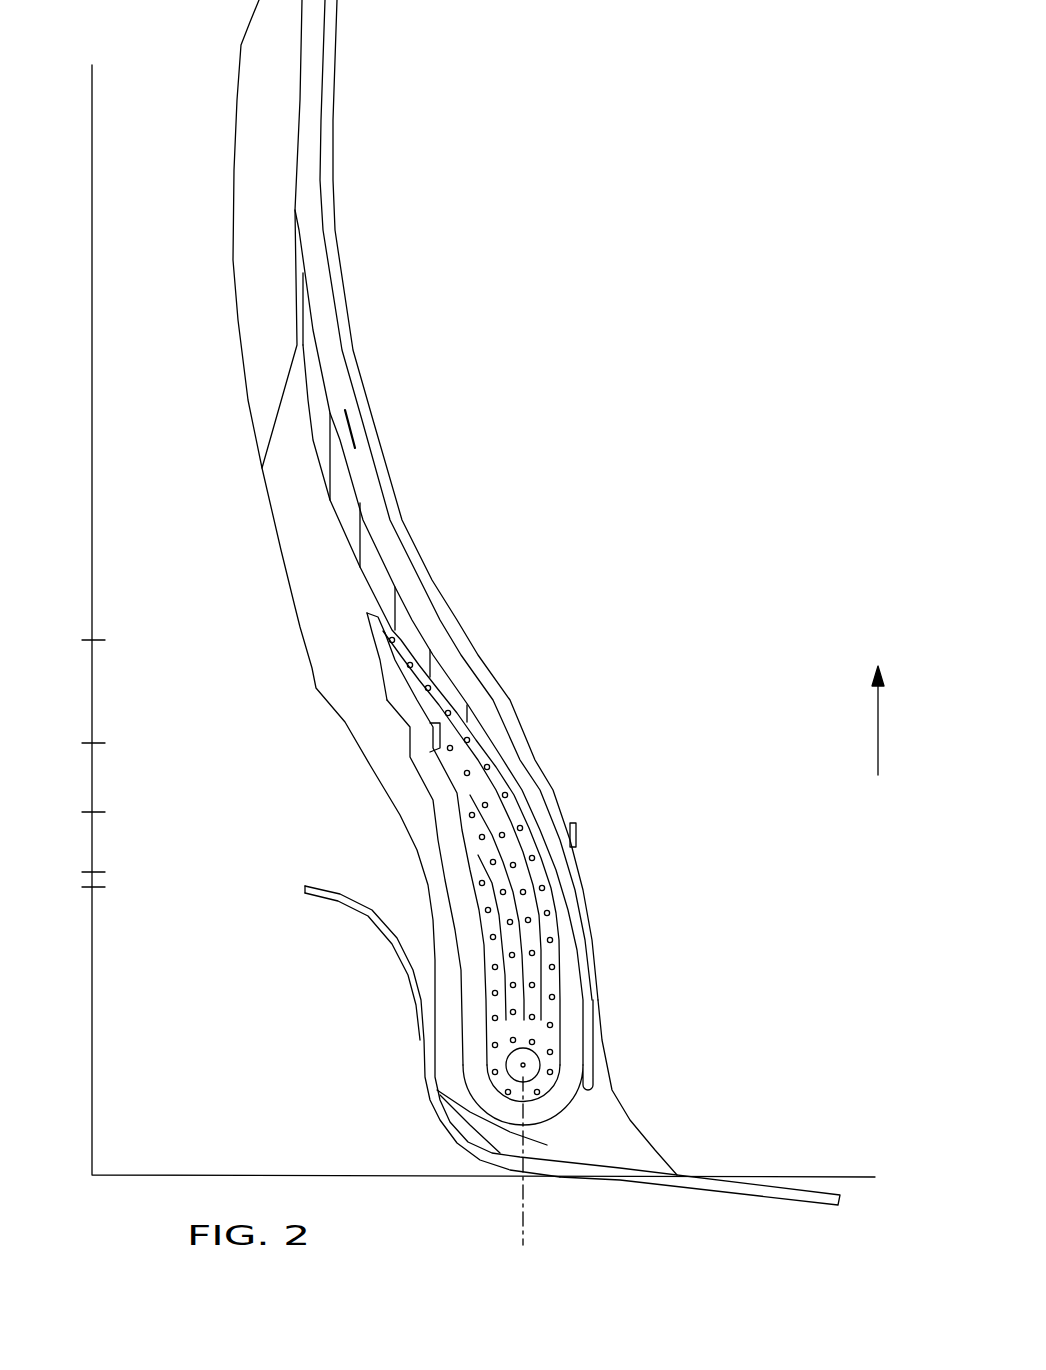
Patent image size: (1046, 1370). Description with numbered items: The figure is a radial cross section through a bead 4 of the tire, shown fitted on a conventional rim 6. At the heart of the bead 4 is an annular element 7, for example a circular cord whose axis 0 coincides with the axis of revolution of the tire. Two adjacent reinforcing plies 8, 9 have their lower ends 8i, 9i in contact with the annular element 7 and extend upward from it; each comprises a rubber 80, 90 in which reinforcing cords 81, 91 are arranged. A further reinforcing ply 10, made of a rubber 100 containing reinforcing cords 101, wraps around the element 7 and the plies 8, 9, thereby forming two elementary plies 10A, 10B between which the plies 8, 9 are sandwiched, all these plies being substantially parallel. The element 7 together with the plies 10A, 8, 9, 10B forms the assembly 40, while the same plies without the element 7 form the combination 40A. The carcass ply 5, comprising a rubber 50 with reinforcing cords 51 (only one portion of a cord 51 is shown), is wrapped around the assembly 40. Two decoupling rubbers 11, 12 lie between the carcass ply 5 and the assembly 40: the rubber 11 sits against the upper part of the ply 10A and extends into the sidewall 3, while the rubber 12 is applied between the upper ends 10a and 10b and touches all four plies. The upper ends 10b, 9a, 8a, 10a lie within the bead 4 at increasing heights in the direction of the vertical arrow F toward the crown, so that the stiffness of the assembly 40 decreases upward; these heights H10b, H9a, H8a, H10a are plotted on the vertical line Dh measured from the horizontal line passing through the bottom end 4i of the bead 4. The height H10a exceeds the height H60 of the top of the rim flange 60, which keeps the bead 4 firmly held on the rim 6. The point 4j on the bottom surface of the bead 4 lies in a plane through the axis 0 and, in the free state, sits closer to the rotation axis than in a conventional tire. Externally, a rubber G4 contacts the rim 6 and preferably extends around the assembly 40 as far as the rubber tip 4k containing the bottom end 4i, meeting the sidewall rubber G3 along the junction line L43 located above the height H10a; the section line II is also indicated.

The sidewall 3 is at (258, 108).
The bead 4 is at (318, 762).
The bottom end of the bead 4i is at (677, 1172).
The point on the bottom surface of the bead 4j is at (520, 1158).
The rubber tip 4k is at (457, 1118).
The carcass ply 5 is at (363, 480).
The rubber of the carcass ply 50 is at (348, 402).
The reinforcing cords of the carcass ply 51 is at (347, 427).
The rim 6 is at (425, 1082).
The annular element 7 is at (535, 1077).
The reinforcing ply 8 is at (540, 898).
The upper end of the reinforcing ply 8 8a is at (443, 738).
The lower end of the reinforcing ply 8 8i is at (548, 1042).
The rubber of the reinforcing ply 8 80 is at (550, 933).
The reinforcing cords of the ply 8 81 is at (545, 872).
The reinforcing ply 9 is at (510, 968).
The upper end of the reinforcing ply 9 9a is at (455, 800).
The lower end of the reinforcing ply 9 9i is at (490, 1056).
The rubber of the reinforcing ply 9 90 is at (487, 907).
The reinforcing cords of the ply 9 91 is at (470, 880).
The reinforcing ply 10 is at (497, 787).
The upper end of the elementary ply 10A 10a is at (392, 632).
The upper end of the elementary ply 10B 10b is at (480, 875).
The elementary ply 10A is at (576, 835).
The elementary ply 10B is at (473, 893).
The rubber of the reinforcing ply 10 100 is at (418, 675).
The reinforcing cords of the ply 10 101 is at (493, 763).
The decoupling rubber 11 is at (363, 553).
The decoupling rubber 12 is at (380, 633).
The assembly 40 is at (530, 965).
The combination of plies 40A is at (538, 1008).
The rim flange 60 is at (330, 905).
The axis of the annular element 0 is at (528, 1066).
The rubber covering the outside of the sidewalls G3 is at (258, 202).
The rubber of the bead intended to contact the rim G4 is at (280, 478).
The junction line L43 is at (284, 388).
The vertical line Dh is at (92, 357).
The height of the end 10a H10a is at (58, 640).
The height of the end 8a H8a is at (66, 743).
The height of the end 9a H9a is at (66, 812).
The height of the end 10b H10b is at (58, 871).
The height of the top of the rim flange H60 is at (66, 894).
The vertical arrow F is at (868, 720).
The section line II is at (492, 1174).